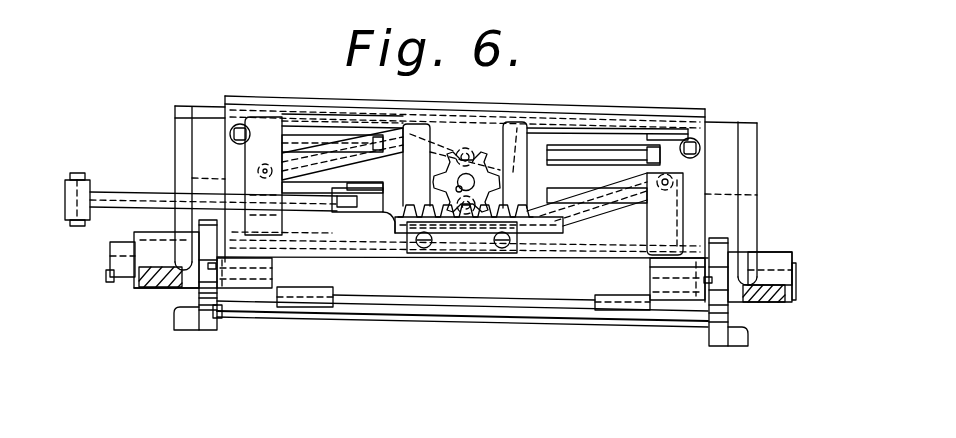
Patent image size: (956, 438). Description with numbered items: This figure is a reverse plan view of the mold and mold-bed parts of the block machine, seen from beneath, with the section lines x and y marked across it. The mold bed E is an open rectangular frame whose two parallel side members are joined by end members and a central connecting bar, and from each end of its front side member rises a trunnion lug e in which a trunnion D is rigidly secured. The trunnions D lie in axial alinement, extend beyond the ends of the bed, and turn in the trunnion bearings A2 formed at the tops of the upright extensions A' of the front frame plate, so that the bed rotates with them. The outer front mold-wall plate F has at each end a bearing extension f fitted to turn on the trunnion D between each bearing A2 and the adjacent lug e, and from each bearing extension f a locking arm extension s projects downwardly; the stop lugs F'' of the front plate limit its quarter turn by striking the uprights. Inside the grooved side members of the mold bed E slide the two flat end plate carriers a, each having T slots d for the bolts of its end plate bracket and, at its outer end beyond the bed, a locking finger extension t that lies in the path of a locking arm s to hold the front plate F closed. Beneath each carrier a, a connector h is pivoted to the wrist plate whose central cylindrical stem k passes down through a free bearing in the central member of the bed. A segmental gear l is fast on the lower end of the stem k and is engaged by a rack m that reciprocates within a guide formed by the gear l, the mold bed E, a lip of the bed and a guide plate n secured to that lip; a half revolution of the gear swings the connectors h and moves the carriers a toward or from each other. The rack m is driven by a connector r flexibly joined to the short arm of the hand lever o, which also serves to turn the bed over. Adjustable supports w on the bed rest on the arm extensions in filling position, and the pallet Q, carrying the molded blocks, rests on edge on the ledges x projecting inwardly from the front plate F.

The end plate carrier a is at (205, 152).
The locking finger extension t is at (178, 214).
The ledge x is at (172, 122).
The section line y is at (465, 122).
The support w is at (230, 135).
The mold bed E is at (560, 258).
The segmental gear l is at (515, 165).
The connector h is at (424, 155).
The T slot d is at (393, 150).
The wrist-plate stem k is at (469, 179).
The rack m is at (388, 224).
The pallet Q is at (462, 237).
The guide plate n is at (441, 257).
The outer front mold-wall plate F is at (460, 300).
The connector r is at (140, 200).
The hand lever o is at (88, 193).
The bearing extension f is at (208, 224).
The feet F'' is at (452, 338).
The trunnion bearing A2 is at (143, 239).
The trunnion D is at (120, 273).
The upright extension A' is at (458, 301).
The locking arm extension s is at (214, 270).
The trunnion lug e is at (273, 265).